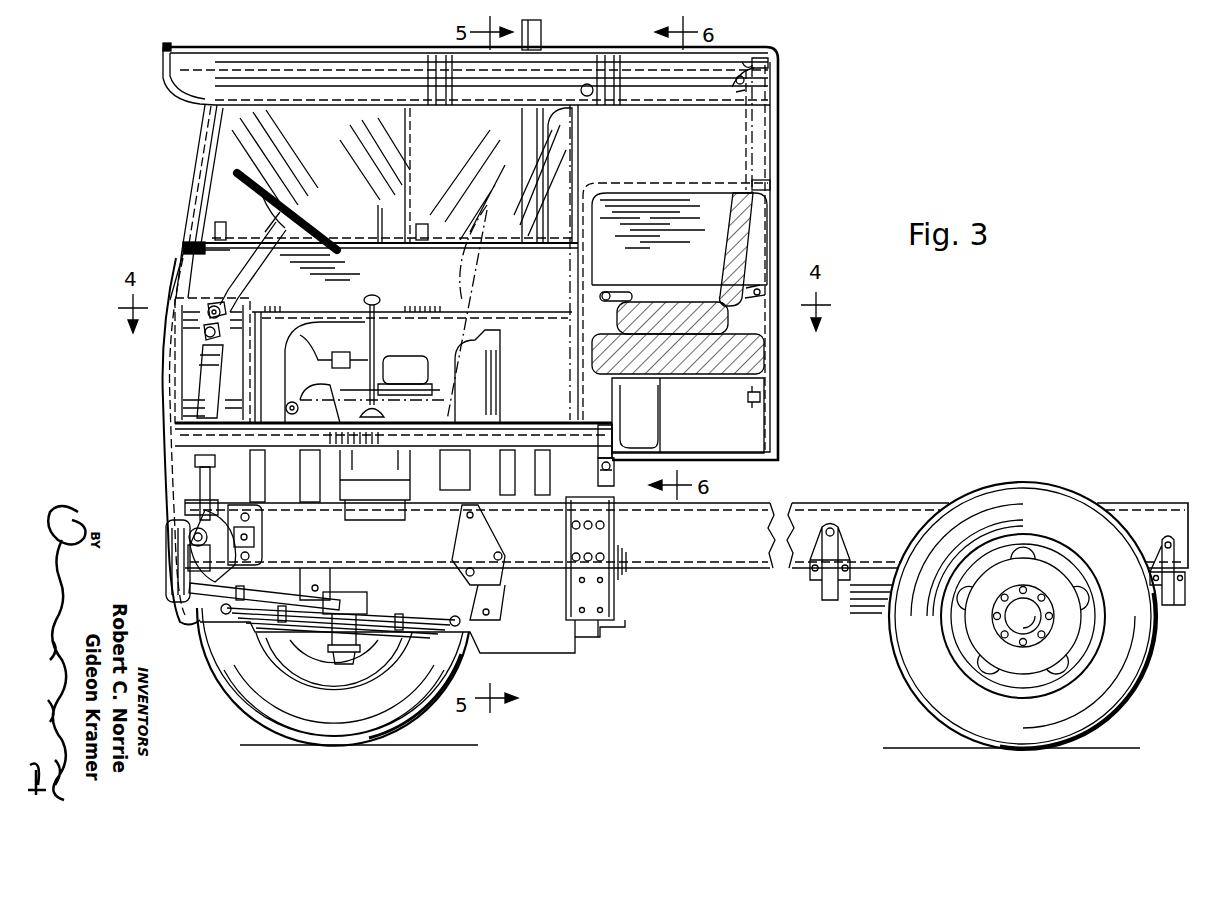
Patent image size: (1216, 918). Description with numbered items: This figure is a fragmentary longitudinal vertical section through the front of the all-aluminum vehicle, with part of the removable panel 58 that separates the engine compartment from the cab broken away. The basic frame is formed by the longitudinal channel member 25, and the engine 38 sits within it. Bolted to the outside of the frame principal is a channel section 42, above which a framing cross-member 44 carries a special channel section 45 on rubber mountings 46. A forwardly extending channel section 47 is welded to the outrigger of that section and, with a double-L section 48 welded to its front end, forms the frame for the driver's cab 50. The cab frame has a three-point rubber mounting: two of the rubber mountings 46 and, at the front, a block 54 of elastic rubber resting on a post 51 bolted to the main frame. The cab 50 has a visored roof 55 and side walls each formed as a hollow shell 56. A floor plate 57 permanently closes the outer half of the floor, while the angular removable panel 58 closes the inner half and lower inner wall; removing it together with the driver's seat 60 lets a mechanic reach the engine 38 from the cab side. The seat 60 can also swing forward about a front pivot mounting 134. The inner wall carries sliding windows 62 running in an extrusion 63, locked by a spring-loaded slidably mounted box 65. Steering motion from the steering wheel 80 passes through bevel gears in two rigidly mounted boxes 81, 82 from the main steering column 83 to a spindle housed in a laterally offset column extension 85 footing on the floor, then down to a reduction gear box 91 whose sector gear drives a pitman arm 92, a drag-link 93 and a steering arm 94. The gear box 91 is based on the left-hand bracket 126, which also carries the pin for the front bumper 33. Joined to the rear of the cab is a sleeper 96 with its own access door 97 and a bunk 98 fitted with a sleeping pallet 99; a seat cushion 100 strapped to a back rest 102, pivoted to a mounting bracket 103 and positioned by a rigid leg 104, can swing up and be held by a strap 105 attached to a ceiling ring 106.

The longitudinal channel member 25 is at (762, 512).
The bumper 33 is at (166, 536).
The engine 38 is at (478, 368).
The channel section 42 is at (612, 593).
The framing cross-member 44 is at (614, 480).
The special channel section 45 is at (614, 430).
The rubber mountings 46 is at (612, 468).
The forwardly extending channel section 47 is at (512, 434).
The double-L section 48 is at (180, 430).
The driver's cab 50 is at (198, 123).
The post 51 is at (200, 480).
The block of elastic rubber 54 is at (196, 462).
The visored roof 55 is at (330, 50).
The hollow shell 56 is at (183, 244).
The floor plate 57 is at (541, 421).
The removable panel 58 is at (540, 322).
The driver's seat 60 is at (357, 314).
The windows 62 is at (380, 243).
The extrusion 63 is at (521, 243).
The slidably mounted box 65 is at (418, 243).
The steering wheel 80 is at (258, 197).
The box 81 is at (216, 330).
The box 82 is at (214, 345).
The main steering column 83 is at (244, 284).
The column extension 85 is at (216, 368).
The reduction gear box 91 is at (186, 505).
The pitman arm 92 is at (188, 558).
The drag-link 93 is at (302, 603).
The steering arm 94 is at (350, 600).
The sleeper 96 is at (782, 133).
The access door 97 is at (612, 198).
The bunk 98 is at (692, 380).
The sleeping pallet 99 is at (758, 352).
The seat cushion 100 is at (681, 310).
The back rest 102 is at (745, 142).
The mounting bracket 103 is at (770, 185).
The rigid leg 104 is at (730, 85).
The strap 105 is at (742, 62).
The ceiling ring 106 is at (758, 58).
The left-hand bracket 126 is at (262, 530).
The front pivot mounting 134 is at (290, 406).